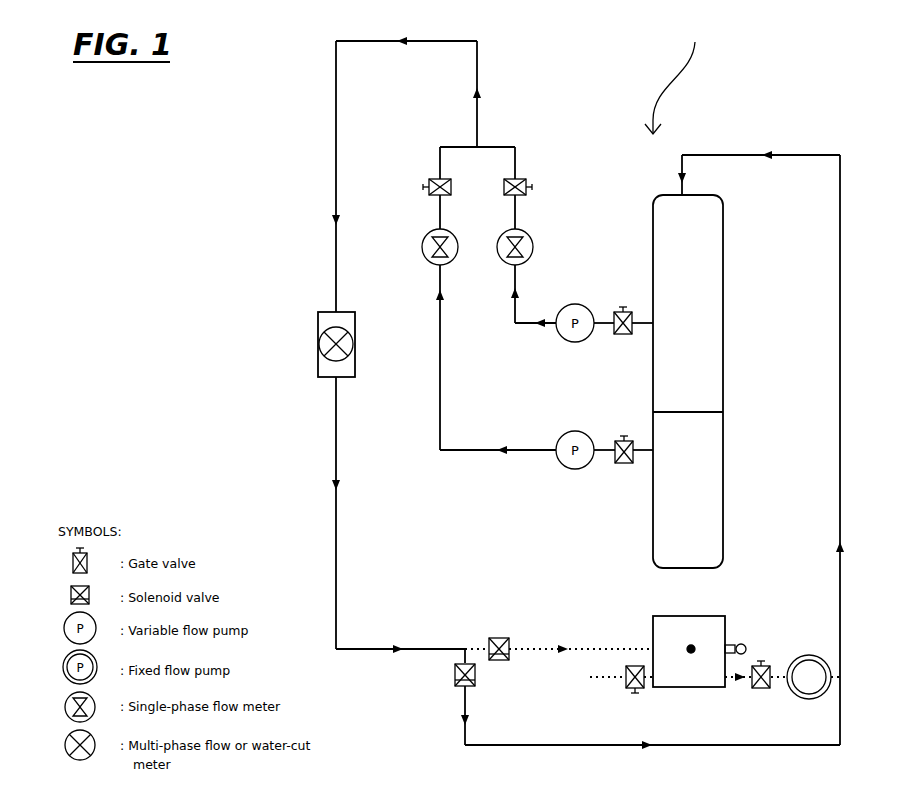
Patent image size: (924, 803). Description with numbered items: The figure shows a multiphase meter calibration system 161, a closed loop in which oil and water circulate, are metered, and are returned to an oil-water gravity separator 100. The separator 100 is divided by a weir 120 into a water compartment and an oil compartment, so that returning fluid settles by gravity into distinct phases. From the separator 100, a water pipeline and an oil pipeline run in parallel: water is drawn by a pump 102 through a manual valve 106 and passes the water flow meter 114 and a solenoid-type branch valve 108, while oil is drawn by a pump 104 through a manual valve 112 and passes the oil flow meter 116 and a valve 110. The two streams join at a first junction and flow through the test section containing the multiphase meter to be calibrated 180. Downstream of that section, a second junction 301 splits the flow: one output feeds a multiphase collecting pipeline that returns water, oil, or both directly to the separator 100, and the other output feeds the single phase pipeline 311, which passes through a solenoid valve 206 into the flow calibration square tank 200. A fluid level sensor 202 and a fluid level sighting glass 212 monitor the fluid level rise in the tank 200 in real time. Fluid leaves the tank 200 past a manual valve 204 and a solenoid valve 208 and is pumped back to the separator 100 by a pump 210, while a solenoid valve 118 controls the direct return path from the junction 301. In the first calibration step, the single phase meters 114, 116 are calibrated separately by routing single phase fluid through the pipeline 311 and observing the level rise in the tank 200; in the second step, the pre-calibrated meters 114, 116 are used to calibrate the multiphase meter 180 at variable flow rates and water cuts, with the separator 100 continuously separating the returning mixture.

The oil-water gravity separator 100 is at (726, 381).
The pump 102 is at (551, 341).
The pump 104 is at (549, 433).
The manual valve 106 is at (595, 293).
The manual valve 108 is at (559, 155).
The manual valve 110 is at (411, 164).
The manual valve 112 is at (591, 478).
The water flow meter 114 is at (548, 223).
The oil flow meter 116 is at (410, 231).
The solenoid valve 118 is at (427, 691).
The weir 120 is at (731, 432).
The multiphase meter calibration system 161 is at (674, 77).
The multiphase meter to be calibrated 180 is at (374, 397).
The flow calibration square tank 200 is at (654, 694).
The fluid level sensor 202 is at (655, 619).
The manual valve 204 is at (597, 693).
The solenoid valve 206 is at (465, 619).
The solenoid valve 208 is at (787, 650).
The pump 210 is at (851, 692).
The fluid level sighting glass 212 is at (772, 614).
The second junction 301 is at (400, 628).
The single phase pipeline 311 is at (559, 602).